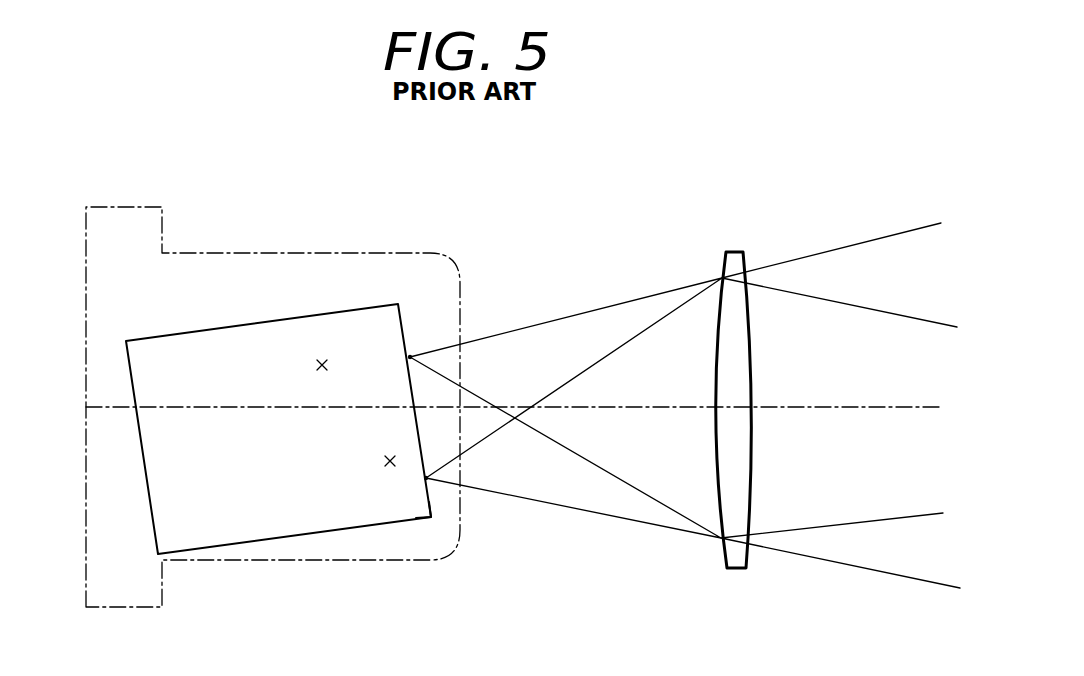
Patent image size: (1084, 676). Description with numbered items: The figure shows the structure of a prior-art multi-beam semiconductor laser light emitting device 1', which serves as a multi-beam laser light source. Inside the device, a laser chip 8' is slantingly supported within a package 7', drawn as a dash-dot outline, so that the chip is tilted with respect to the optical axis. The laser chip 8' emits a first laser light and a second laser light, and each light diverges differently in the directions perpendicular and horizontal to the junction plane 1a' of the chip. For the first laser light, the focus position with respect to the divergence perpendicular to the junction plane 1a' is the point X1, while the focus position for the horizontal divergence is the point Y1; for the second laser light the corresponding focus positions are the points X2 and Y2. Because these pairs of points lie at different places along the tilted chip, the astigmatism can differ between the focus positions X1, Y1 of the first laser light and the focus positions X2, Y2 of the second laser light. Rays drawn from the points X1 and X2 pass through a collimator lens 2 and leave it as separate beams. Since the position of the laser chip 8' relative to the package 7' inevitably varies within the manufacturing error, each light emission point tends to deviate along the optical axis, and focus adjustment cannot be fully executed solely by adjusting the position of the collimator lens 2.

The multi-beam semiconductor laser light emitting device 1' is at (273, 367).
The package 7' is at (273, 389).
The laser chip 8' is at (269, 360).
The junction plane 1a' is at (471, 567).
The focus position of the first laser light (perpendicular direction) X1 is at (410, 357).
The focus position of the second laser light (perpendicular direction) X2 is at (426, 478).
The focus position of the first laser light (horizontal direction) Y1 is at (322, 362).
The focus position of the second laser light (horizontal direction) Y2 is at (391, 466).
The collimator lens 2 is at (748, 262).